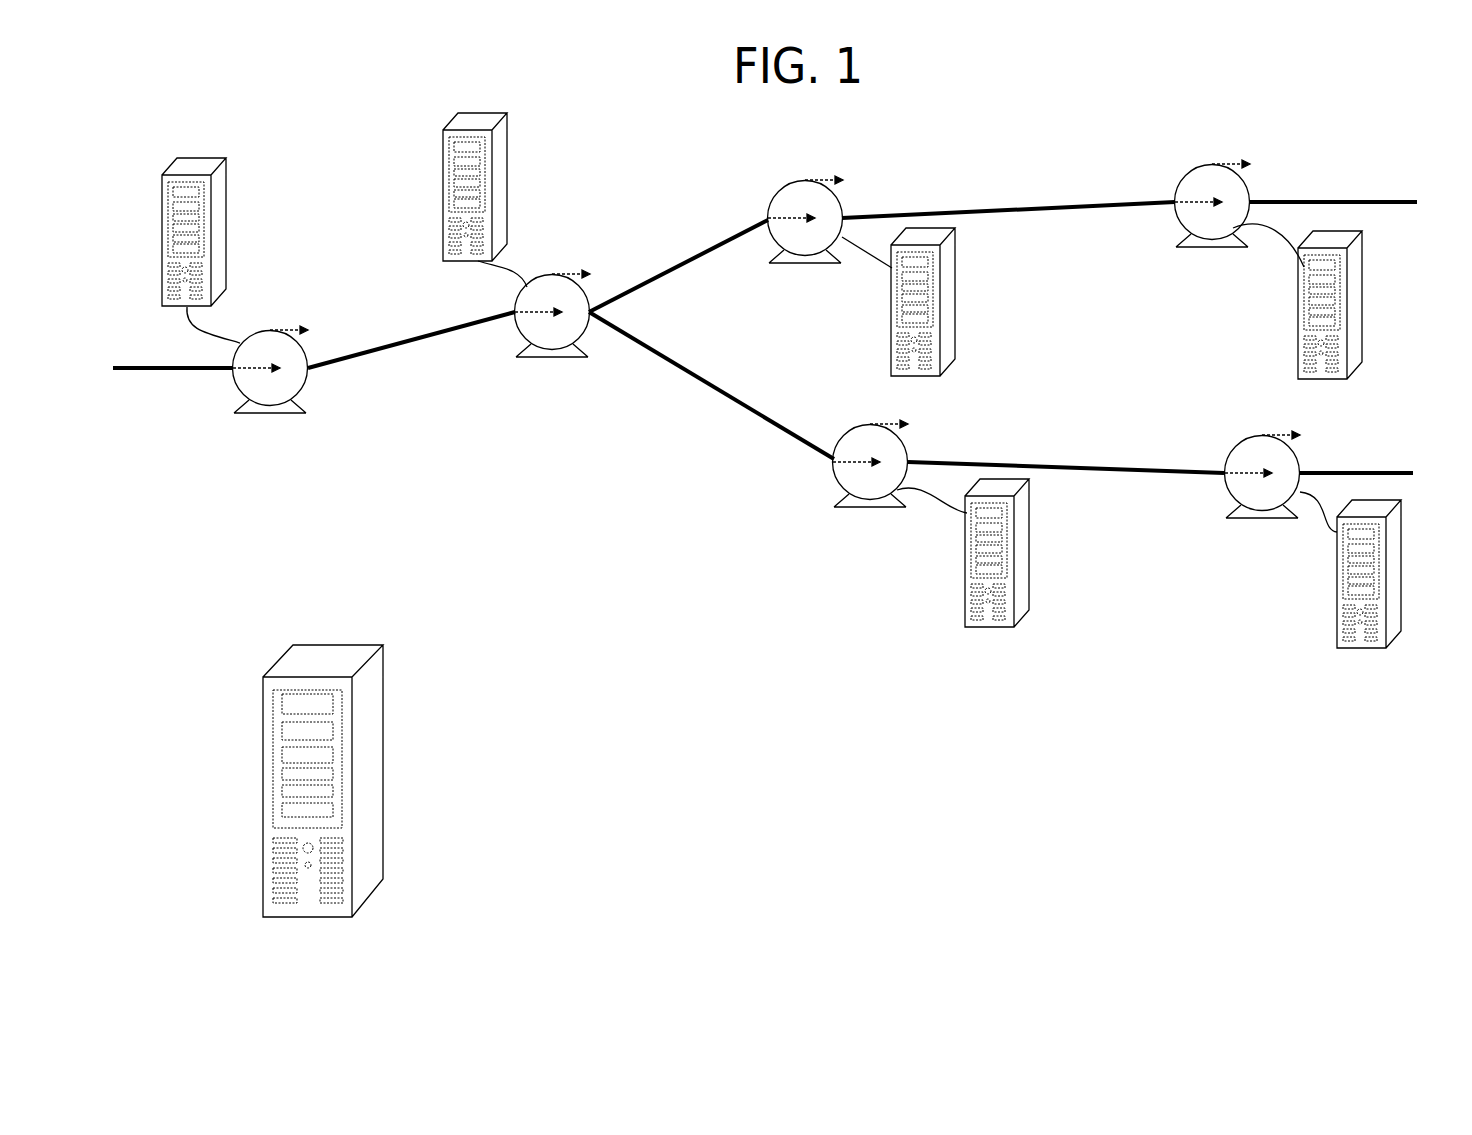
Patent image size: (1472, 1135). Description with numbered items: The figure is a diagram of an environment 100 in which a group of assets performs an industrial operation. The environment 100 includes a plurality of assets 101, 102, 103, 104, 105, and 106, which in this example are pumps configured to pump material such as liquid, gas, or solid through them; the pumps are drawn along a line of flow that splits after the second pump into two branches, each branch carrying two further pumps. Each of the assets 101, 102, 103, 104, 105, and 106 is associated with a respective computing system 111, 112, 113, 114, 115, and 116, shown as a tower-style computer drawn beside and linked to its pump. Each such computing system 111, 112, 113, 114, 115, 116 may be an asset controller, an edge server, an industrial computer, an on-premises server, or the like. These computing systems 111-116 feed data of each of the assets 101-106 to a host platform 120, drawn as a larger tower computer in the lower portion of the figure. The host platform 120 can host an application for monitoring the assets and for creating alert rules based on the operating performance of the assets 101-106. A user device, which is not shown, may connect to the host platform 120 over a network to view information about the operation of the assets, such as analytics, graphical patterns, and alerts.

The environment 100 is at (183, 78).
The asset 101 is at (269, 386).
The asset 102 is at (551, 329).
The asset 103 is at (805, 236).
The asset 104 is at (871, 480).
The asset 105 is at (1212, 223).
The asset 106 is at (1261, 492).
The computing system 111 is at (228, 202).
The computing system 112 is at (509, 163).
The computing system 113 is at (953, 297).
The computing system 114 is at (1030, 555).
The computing system 115 is at (1365, 307).
The computing system 116 is at (1403, 578).
The host platform 120 is at (311, 801).